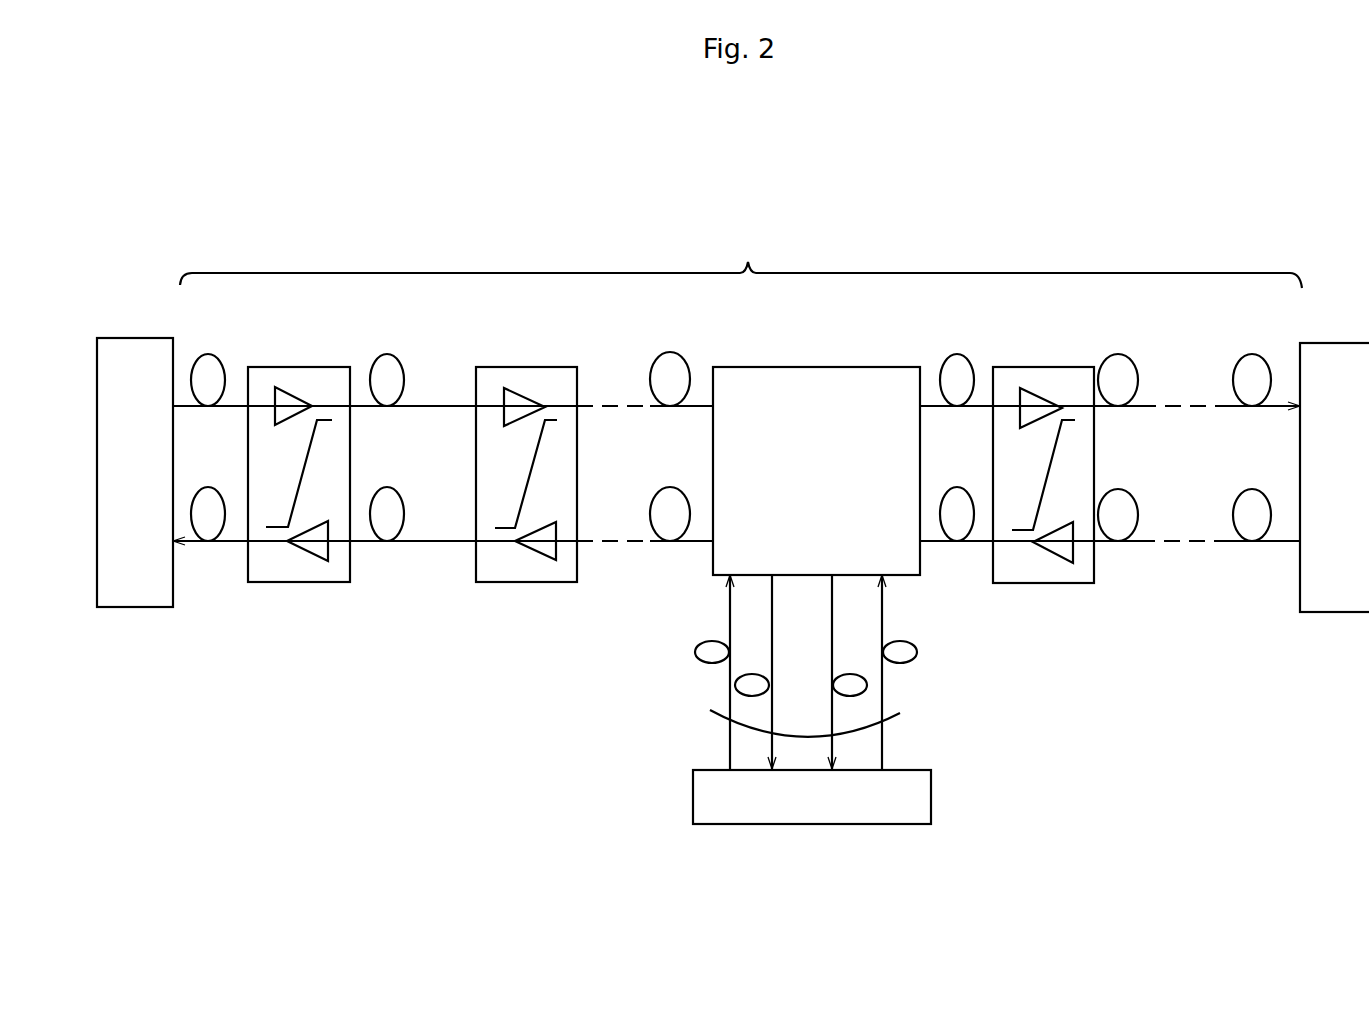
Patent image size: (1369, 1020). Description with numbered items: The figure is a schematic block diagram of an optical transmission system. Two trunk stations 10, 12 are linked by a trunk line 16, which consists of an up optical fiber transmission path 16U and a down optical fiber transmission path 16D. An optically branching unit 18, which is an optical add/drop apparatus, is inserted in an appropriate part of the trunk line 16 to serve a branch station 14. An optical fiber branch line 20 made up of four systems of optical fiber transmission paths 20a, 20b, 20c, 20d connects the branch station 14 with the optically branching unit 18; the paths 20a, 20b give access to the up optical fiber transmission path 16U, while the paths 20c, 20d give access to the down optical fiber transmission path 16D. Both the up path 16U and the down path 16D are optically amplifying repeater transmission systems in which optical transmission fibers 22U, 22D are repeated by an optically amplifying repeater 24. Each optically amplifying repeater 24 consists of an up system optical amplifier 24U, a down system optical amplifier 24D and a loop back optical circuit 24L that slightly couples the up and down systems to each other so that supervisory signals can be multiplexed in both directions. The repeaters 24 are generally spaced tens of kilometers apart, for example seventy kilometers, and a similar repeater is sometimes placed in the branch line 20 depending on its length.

The trunk station 10 is at (127, 350).
The trunk station 12 is at (1330, 353).
The branch station 14 is at (828, 818).
The trunk line 16 is at (737, 386).
The up optical fiber transmission path 16U is at (622, 397).
The down optical fiber transmission path 16D is at (630, 548).
The optically branching unit 18 is at (828, 380).
The optical fiber branch line 20 is at (795, 672).
The optical fiber transmission path 20a is at (708, 652).
The optical fiber transmission path 20b is at (903, 652).
The optical fiber transmission path 20c is at (832, 707).
The optical fiber transmission path 20d is at (775, 637).
The optical transmission fiber 22U is at (208, 365).
The optical transmission fiber 22D is at (208, 500).
The optically amplifying repeater 24 is at (671, 472).
The up system optical amplifier 24U is at (515, 390).
The down system optical amplifier 24D is at (547, 545).
The loop back optical circuit 24L is at (525, 467).